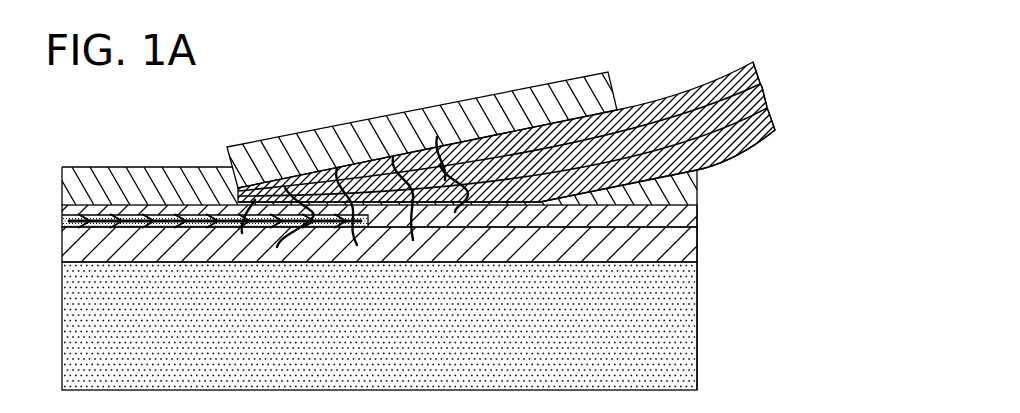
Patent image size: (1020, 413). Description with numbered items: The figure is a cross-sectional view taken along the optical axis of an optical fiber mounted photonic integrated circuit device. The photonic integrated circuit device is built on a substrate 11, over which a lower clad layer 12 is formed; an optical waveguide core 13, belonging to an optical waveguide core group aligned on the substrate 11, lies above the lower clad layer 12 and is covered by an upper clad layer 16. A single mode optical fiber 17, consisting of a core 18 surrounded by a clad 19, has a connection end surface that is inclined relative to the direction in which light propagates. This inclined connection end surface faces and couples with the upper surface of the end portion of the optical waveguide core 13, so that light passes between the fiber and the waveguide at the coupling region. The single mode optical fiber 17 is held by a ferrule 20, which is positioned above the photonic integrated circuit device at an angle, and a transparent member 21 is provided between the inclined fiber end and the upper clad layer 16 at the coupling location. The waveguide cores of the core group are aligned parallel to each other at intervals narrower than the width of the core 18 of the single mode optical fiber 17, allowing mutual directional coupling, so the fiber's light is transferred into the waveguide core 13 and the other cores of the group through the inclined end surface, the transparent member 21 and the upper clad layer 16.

The substrate 11 is at (698, 312).
The lower clad layer 12 is at (698, 247).
The optical waveguide core 13 is at (62, 222).
The upper clad layer 16 is at (698, 212).
The single mode optical fiber 17 is at (507, 115).
The core 18 is at (762, 92).
The clad 19 is at (758, 66).
The ferrule 20 is at (611, 84).
The transparent member 21 is at (700, 182).